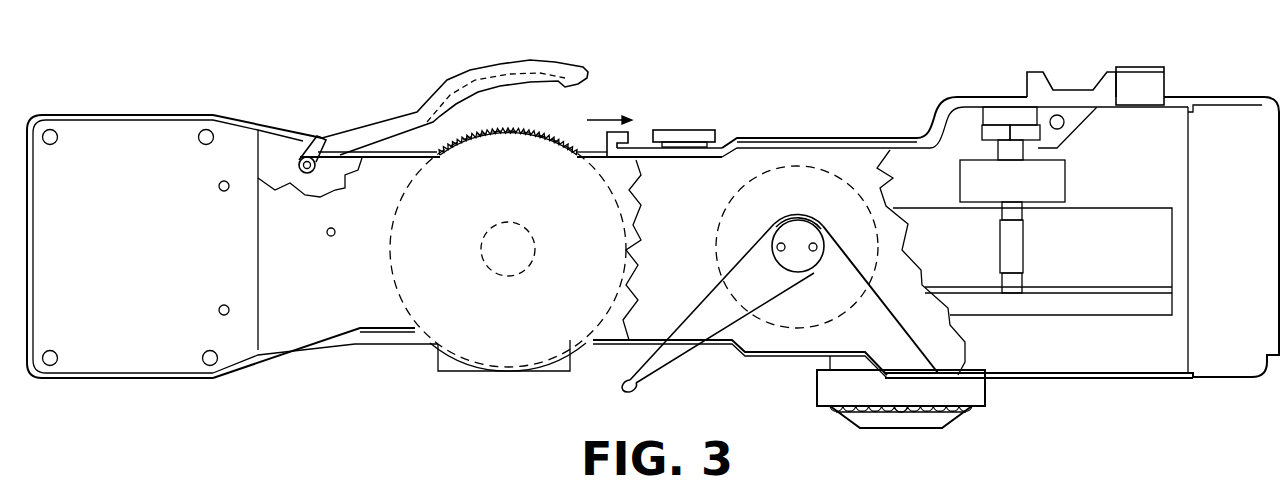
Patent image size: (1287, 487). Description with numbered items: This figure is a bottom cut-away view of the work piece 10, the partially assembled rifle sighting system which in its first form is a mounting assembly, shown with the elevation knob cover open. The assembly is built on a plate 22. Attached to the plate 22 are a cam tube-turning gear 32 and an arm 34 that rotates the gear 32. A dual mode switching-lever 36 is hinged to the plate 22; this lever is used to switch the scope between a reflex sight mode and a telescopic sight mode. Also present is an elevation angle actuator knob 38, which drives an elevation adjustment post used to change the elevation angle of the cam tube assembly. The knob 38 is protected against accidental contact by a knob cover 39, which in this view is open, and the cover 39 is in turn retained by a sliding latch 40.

The work piece 10 is at (384, 92).
The plate 22 is at (777, 340).
The cam tube-turning gear 32 is at (800, 165).
The arm 34 is at (622, 393).
The dual mode switching-lever 36 is at (1053, 70).
The elevation angle actuator knob 38 is at (498, 128).
The knob cover 39 is at (551, 60).
The sliding latch 40 is at (633, 133).